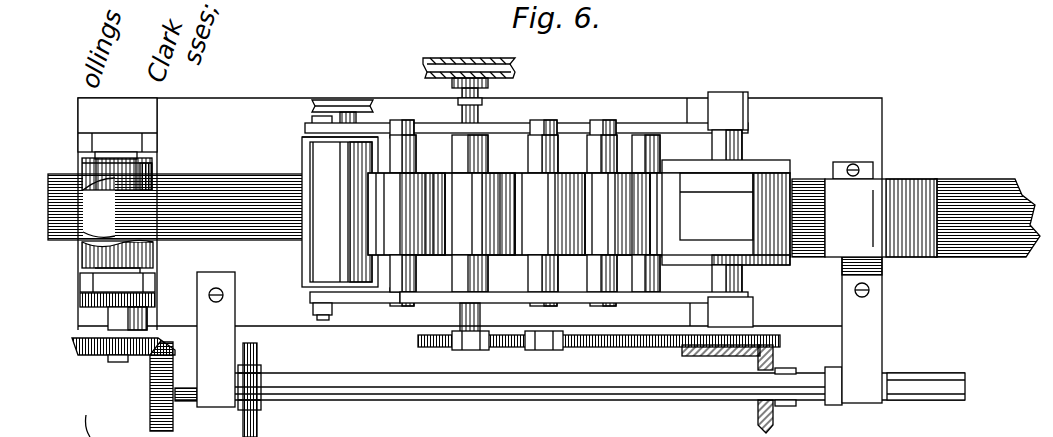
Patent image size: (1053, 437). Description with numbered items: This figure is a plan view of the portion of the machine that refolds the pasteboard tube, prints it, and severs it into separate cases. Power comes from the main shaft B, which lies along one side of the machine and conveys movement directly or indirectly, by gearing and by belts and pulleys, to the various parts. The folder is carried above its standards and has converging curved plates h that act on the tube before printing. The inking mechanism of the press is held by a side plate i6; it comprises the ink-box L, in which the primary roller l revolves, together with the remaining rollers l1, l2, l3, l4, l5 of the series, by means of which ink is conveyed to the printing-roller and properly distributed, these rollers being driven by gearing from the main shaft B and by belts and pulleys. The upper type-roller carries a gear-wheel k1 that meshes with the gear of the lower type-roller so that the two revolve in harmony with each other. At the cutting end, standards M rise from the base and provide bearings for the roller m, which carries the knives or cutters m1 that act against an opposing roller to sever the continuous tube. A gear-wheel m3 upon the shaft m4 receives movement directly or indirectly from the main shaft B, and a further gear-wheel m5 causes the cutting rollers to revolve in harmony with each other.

The standards M is at (117, 125).
The roller m is at (150, 171).
The knives or cutters m1 is at (98, 180).
The gear-wheel m5 is at (80, 299).
The gear-wheel m3 is at (76, 346).
The shaft m4 is at (118, 362).
The ink-box L is at (305, 138).
The primary roller l is at (351, 228).
The roller l1 is at (406, 214).
The roller l2 is at (480, 214).
The roller l3 is at (550, 214).
The roller l4 is at (617, 214).
The roller l5 is at (720, 212).
The side plate i6 is at (517, 123).
The converging curved plates h is at (881, 209).
The main shaft B is at (328, 379).
The gear-wheel k1 is at (781, 340).